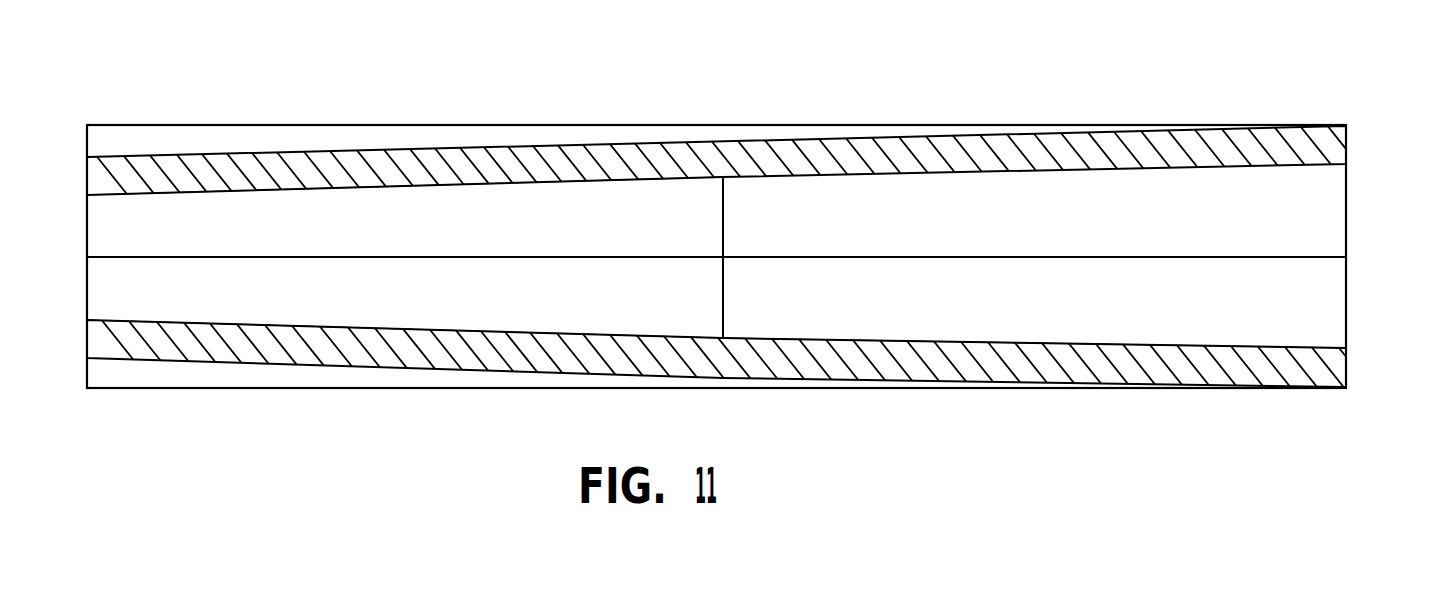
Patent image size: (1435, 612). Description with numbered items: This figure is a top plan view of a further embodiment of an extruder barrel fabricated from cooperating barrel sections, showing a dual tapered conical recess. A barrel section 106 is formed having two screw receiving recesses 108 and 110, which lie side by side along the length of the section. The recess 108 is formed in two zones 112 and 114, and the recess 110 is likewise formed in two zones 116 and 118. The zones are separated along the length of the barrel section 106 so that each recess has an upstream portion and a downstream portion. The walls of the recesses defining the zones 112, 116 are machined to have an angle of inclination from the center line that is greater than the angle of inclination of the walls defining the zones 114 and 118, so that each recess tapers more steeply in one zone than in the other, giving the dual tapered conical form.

The barrel section 106 is at (607, 127).
The screw receiving recess 108 is at (1315, 232).
The screw receiving recess 110 is at (1333, 327).
The zone 112 is at (467, 239).
The zone 114 is at (957, 239).
The zone 116 is at (467, 307).
The zone 118 is at (957, 320).